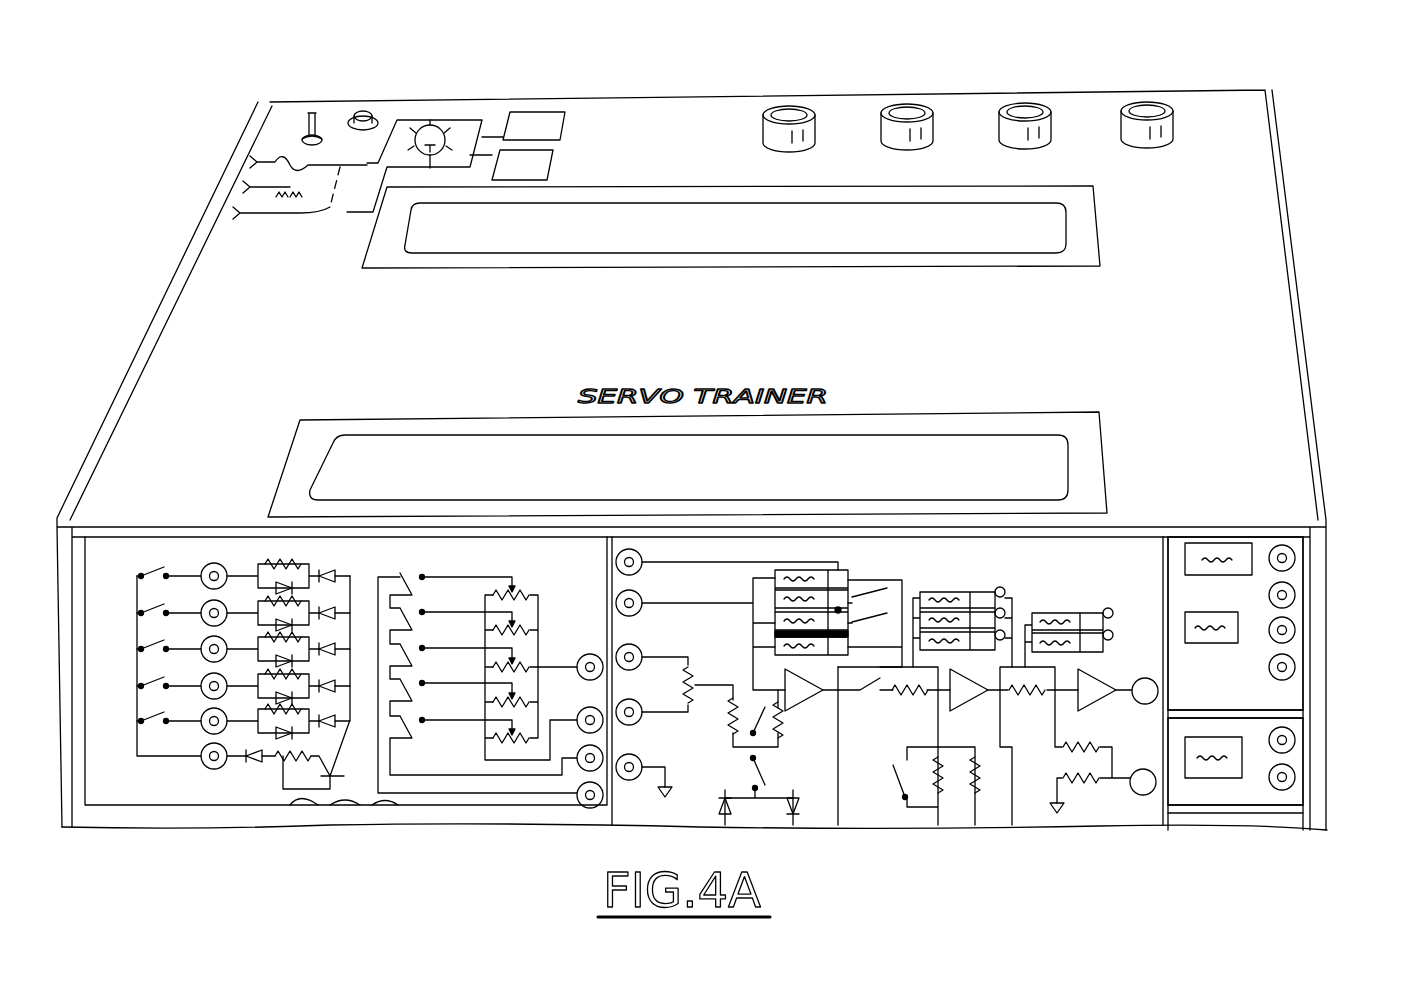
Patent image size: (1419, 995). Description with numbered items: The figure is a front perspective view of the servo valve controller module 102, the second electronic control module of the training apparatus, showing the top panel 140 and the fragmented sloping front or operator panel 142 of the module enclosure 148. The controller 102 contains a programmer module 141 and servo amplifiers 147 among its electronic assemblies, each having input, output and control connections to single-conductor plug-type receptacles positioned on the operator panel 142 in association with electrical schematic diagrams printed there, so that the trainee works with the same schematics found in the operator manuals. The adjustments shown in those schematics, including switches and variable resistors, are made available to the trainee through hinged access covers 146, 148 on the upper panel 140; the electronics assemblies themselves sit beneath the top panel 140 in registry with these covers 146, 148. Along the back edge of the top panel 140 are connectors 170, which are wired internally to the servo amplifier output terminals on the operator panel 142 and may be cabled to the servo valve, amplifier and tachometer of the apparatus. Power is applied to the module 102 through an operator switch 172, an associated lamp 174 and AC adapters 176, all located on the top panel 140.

The servo valve controller module 102 is at (1048, 86).
The top panel 140 is at (1268, 217).
The programmer module 141 is at (580, 580).
The operator panel 142 is at (1293, 535).
The hinged access cover 146 is at (1097, 455).
The servo amplifier 147 is at (1097, 577).
The module enclosure 148 is at (1087, 230).
The connectors 170 is at (1052, 120).
The operator switch 172 is at (342, 160).
The lamp 174 is at (432, 126).
The AC adapters 176 is at (553, 165).